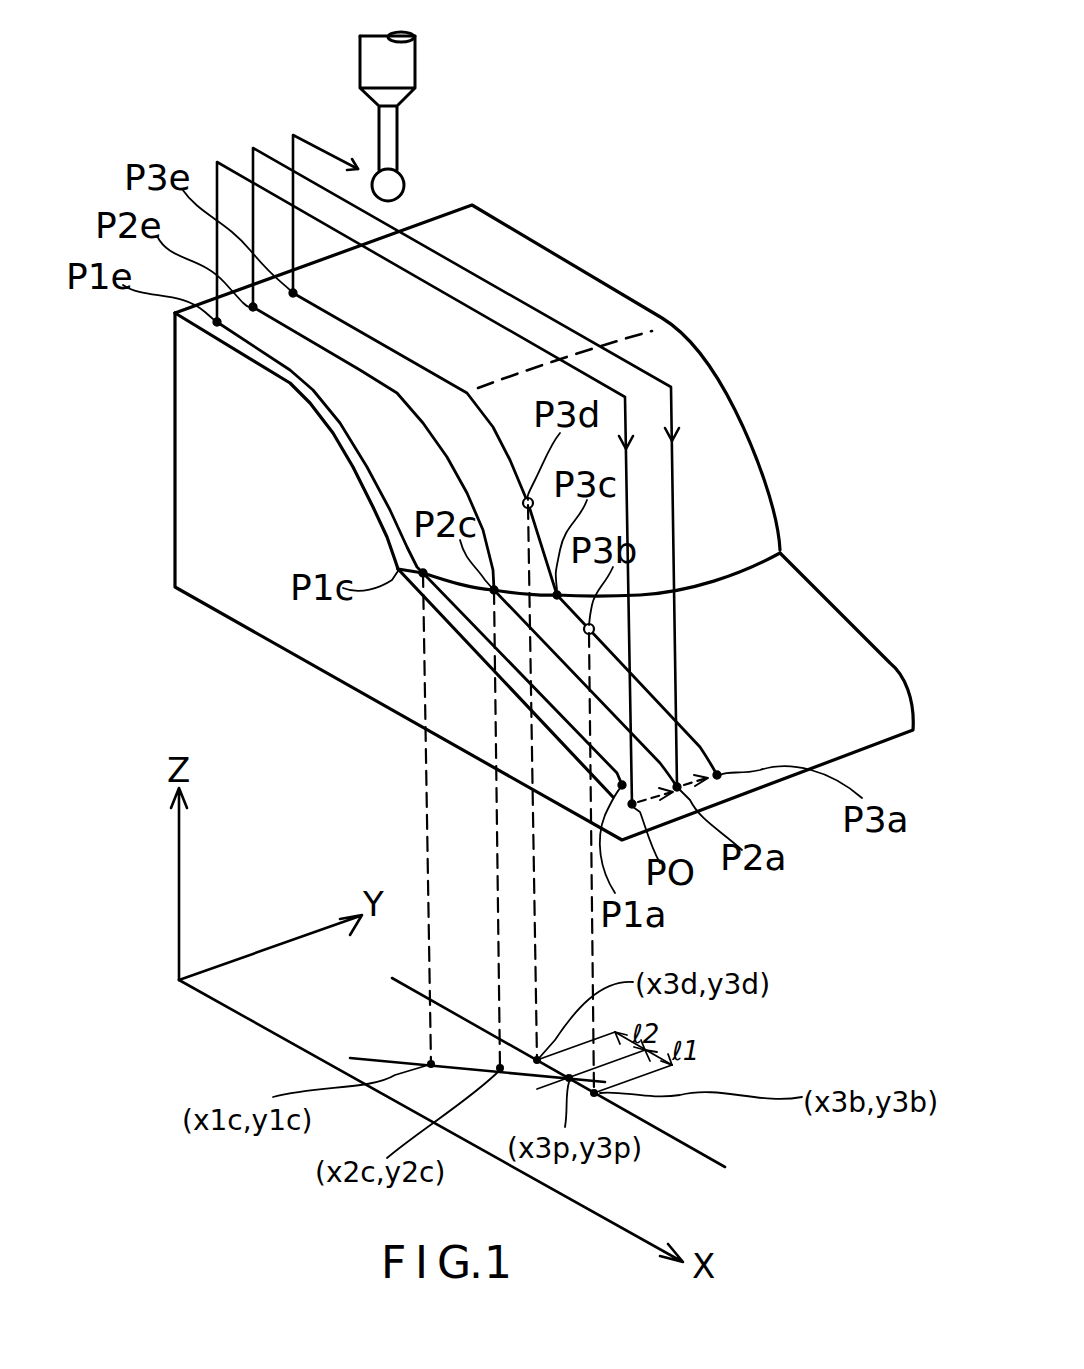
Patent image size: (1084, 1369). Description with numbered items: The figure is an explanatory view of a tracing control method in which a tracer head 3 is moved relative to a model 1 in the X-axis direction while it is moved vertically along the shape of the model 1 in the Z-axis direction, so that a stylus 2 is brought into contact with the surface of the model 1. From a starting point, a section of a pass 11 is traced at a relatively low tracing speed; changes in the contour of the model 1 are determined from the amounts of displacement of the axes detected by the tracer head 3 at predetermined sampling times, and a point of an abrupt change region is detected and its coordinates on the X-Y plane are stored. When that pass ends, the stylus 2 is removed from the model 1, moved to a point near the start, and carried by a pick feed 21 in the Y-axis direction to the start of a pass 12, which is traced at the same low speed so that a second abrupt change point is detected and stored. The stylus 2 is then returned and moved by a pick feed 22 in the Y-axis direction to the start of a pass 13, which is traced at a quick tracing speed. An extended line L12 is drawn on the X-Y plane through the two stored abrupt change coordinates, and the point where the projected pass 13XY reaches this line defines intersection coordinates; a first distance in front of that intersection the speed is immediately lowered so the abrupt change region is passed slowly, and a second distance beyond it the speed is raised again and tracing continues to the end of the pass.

The model 1 is at (593, 272).
The stylus 2 is at (406, 172).
The tracer head 3 is at (421, 66).
The pass 11 is at (260, 350).
The pass 12 is at (303, 390).
The pass 13 is at (367, 332).
The pick feed 21 is at (658, 800).
The pick feed 22 is at (702, 787).
The extended line L12 is at (365, 1055).
The pass on the X-Y plane 13XY is at (718, 1160).